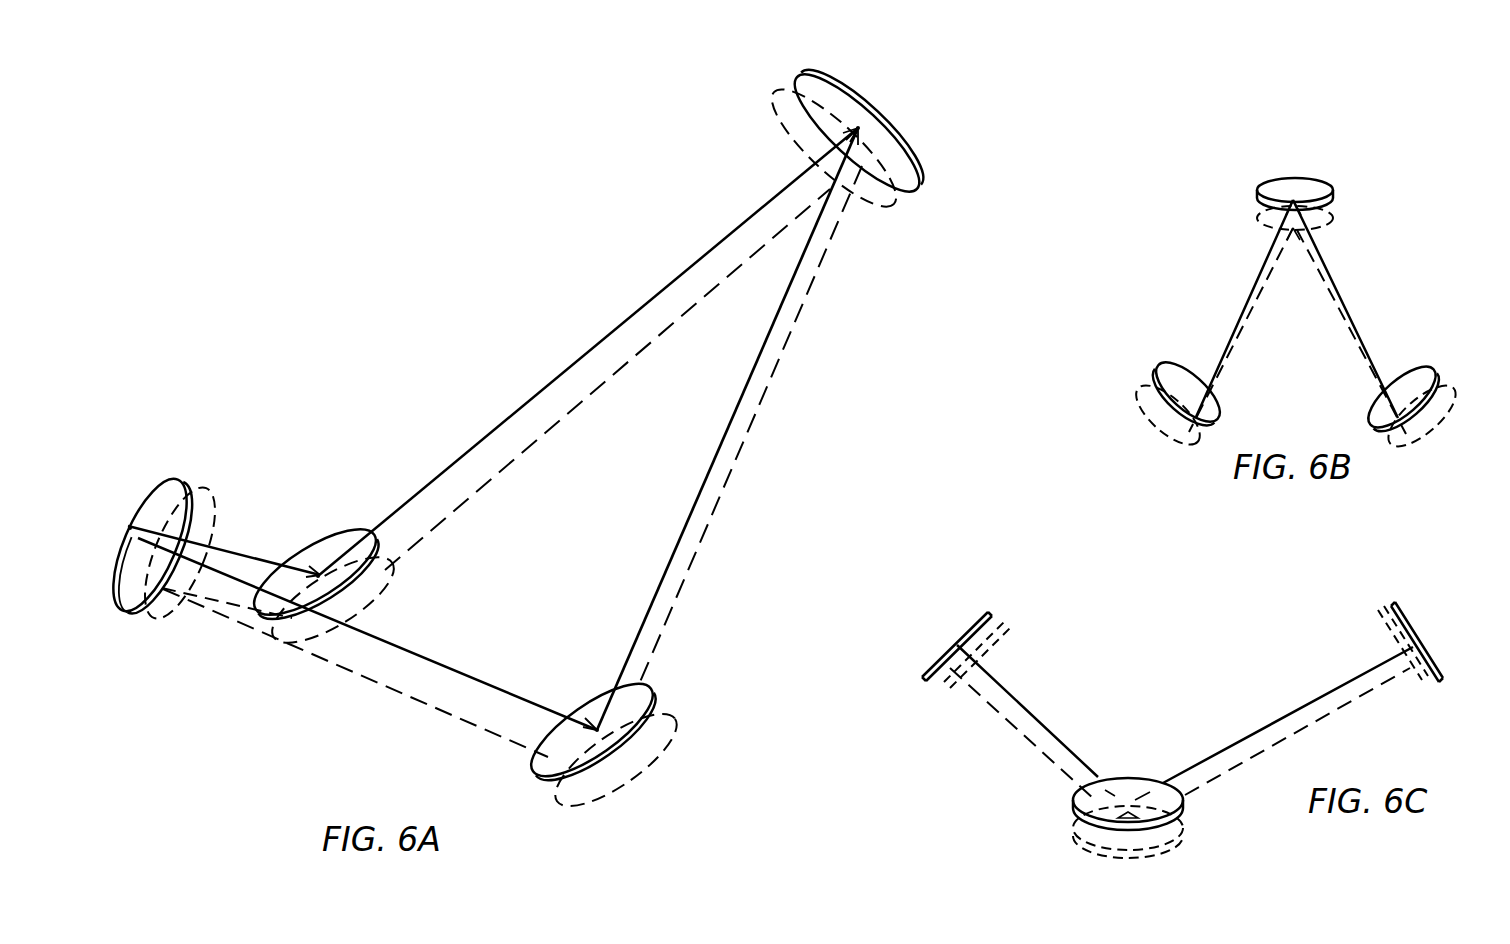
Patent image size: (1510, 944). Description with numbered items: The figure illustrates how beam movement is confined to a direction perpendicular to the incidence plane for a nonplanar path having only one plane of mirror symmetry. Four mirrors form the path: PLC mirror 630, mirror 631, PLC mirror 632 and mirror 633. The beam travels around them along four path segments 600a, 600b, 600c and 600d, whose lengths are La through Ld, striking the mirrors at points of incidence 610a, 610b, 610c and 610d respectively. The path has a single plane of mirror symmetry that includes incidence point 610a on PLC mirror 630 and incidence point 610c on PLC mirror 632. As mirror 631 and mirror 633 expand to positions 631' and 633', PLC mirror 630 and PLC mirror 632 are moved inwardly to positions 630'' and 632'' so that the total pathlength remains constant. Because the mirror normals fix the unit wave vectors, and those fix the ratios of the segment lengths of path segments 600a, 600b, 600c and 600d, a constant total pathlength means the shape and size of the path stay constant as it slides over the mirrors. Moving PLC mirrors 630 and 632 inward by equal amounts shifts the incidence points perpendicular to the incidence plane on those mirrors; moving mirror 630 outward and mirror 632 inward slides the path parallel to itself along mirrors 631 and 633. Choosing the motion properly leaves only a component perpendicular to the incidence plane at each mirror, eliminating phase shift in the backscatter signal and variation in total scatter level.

In FIG. 6A, the PLC mirror 630 is at (152, 528).
In FIG. 6B, the PLC mirror 630 is at (1316, 180).
In FIG. 6C, the PLC mirror 630 is at (957, 629).
In FIG. 6A, the inward position of PLC mirror 630 630'' is at (202, 541).
In FIG. 6B, the inward position of PLC mirror 630 630'' is at (1334, 215).
In FIG. 6C, the inward position of PLC mirror 630 630'' is at (1004, 651).
In FIG. 6A, the mirror 631 is at (316, 556).
In FIG. 6B, the mirror 631 is at (1187, 384).
In FIG. 6A, the expanded position of mirror 631 631' is at (357, 600).
In FIG. 6B, the expanded position of mirror 631 631' is at (1150, 414).
In FIG. 6A, the PLC mirror 632 is at (880, 130).
In FIG. 6C, the PLC mirror 632 is at (1433, 636).
In FIG. 6A, the inward position of PLC mirror 632 632'' is at (837, 159).
In FIG. 6C, the inward position of PLC mirror 632 632'' is at (1374, 635).
In FIG. 6A, the mirror 633 is at (611, 732).
In FIG. 6B, the mirror 633 is at (1418, 388).
In FIG. 6C, the mirror 633 is at (1165, 804).
In FIG. 6A, the expanded position of mirror 633 633' is at (638, 760).
In FIG. 6B, the expanded position of mirror 633 633' is at (1444, 415).
In FIG. 6C, the expanded position of mirror 633 633' is at (1152, 837).
In FIG. 6A, the point of incidence 610a is at (128, 528).
In FIG. 6A, the point of incidence 610b is at (318, 575).
In FIG. 6A, the point of incidence 610c is at (860, 127).
In FIG. 6A, the point of incidence 610d is at (597, 728).
In FIG. 6A, the path segment 600a is at (422, 655).
In FIG. 6A, the path segment 600b is at (238, 567).
In FIG. 6A, the path segment 600c is at (626, 320).
In FIG. 6A, the path segment 600d is at (720, 432).